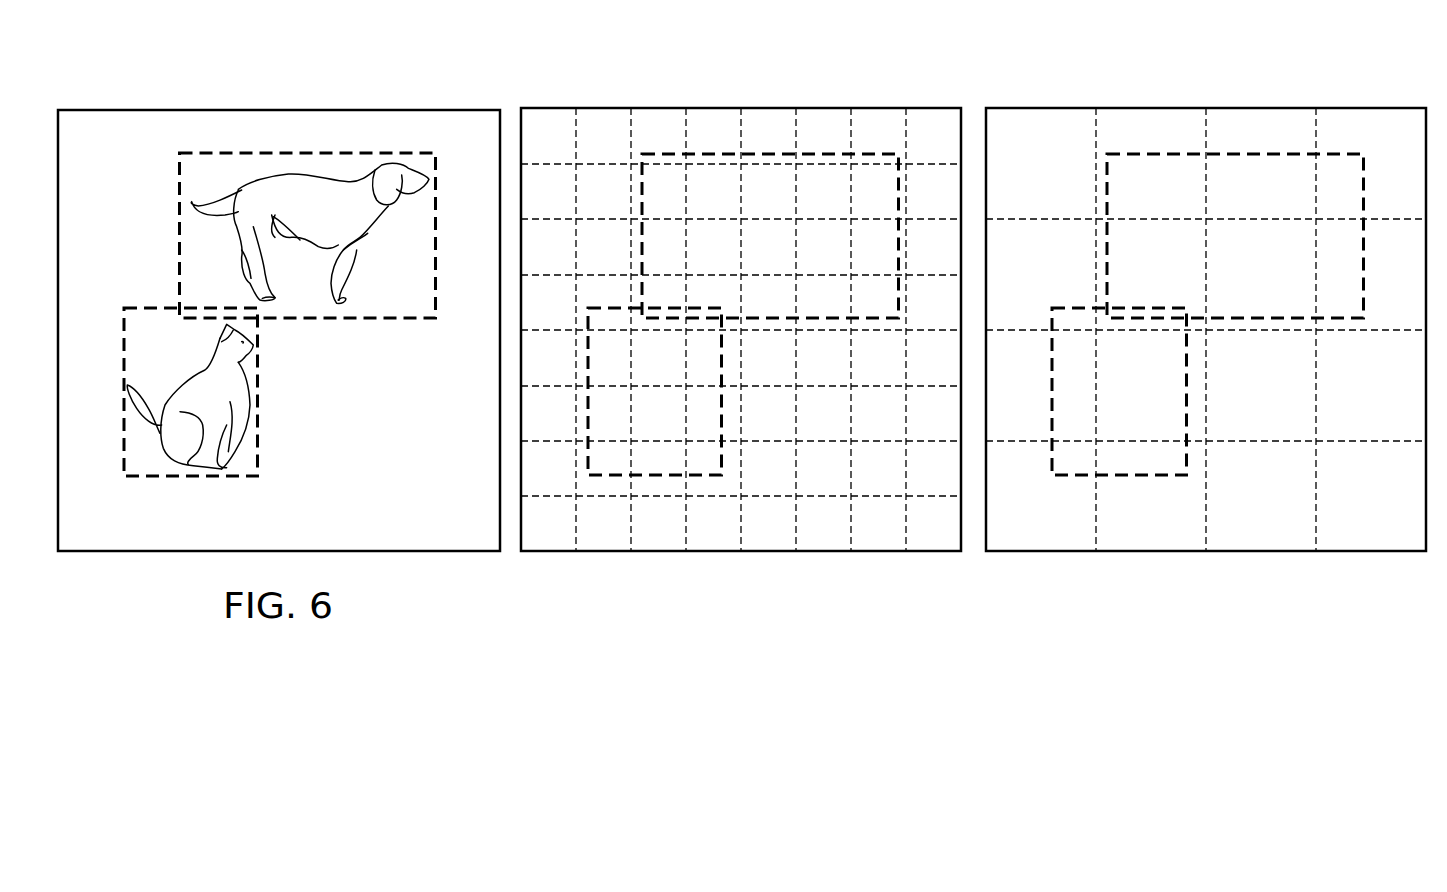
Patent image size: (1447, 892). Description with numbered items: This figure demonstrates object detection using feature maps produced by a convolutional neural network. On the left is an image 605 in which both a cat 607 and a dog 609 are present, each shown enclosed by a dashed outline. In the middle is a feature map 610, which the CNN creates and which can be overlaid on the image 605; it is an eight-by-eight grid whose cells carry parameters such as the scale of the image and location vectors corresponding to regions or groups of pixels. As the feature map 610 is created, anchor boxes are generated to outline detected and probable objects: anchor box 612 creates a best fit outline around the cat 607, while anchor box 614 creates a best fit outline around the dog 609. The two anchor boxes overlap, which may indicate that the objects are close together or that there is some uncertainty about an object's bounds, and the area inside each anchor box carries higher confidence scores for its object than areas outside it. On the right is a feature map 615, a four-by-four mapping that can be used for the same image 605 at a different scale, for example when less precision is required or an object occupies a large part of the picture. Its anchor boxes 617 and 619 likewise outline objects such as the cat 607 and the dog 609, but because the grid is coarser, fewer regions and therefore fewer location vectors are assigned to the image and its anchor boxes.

The image 605 is at (252, 102).
The cat 607 is at (257, 416).
The dog 609 is at (371, 326).
The feature map 610 is at (655, 102).
The anchor box 612 is at (668, 476).
The anchor box 614 is at (808, 152).
The feature map 615 is at (1125, 102).
The anchor box 617 is at (1130, 476).
The anchor box 619 is at (1247, 152).